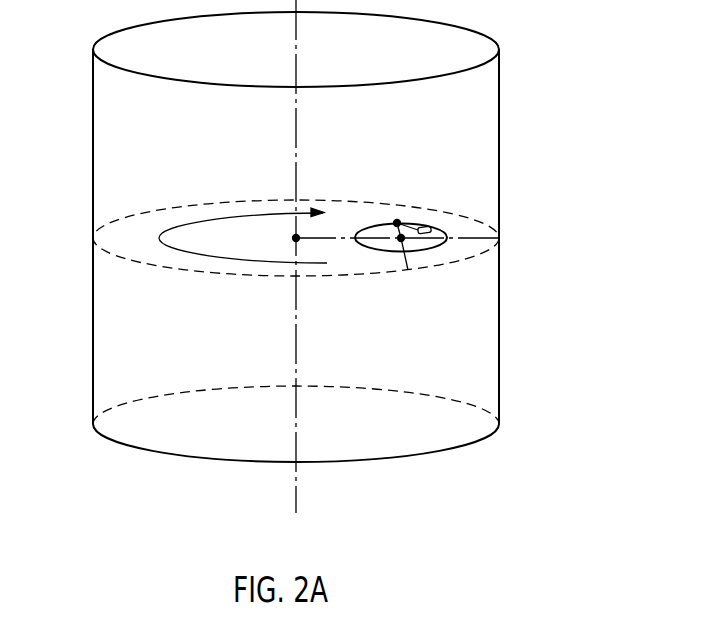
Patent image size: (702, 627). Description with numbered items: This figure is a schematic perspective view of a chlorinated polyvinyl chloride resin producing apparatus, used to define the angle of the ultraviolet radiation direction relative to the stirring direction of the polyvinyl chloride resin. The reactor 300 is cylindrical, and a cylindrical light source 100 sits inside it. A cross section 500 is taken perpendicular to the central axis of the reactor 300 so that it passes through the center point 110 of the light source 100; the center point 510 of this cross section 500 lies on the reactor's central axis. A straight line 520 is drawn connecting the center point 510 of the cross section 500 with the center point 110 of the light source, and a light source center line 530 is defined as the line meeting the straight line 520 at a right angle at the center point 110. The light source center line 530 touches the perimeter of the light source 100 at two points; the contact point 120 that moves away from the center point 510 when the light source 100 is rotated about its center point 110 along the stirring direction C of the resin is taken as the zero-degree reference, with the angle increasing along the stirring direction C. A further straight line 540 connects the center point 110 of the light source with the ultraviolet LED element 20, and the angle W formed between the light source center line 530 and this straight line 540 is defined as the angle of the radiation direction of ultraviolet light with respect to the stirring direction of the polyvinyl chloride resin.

The cross section 500 is at (448, 212).
The reactor 300 is at (499, 339).
The center point of the cross section 510 is at (296, 238).
The straight line 520 is at (495, 230).
The light source 100 is at (445, 246).
The ultraviolet LED element 20 is at (447, 232).
The contact point 120 is at (397, 223).
The light source center line 530 is at (397, 223).
The center point of the light source 110 is at (401, 238).
The straight line 540 is at (401, 238).
The angle W is at (428, 229).
The stirring direction C is at (130, 238).